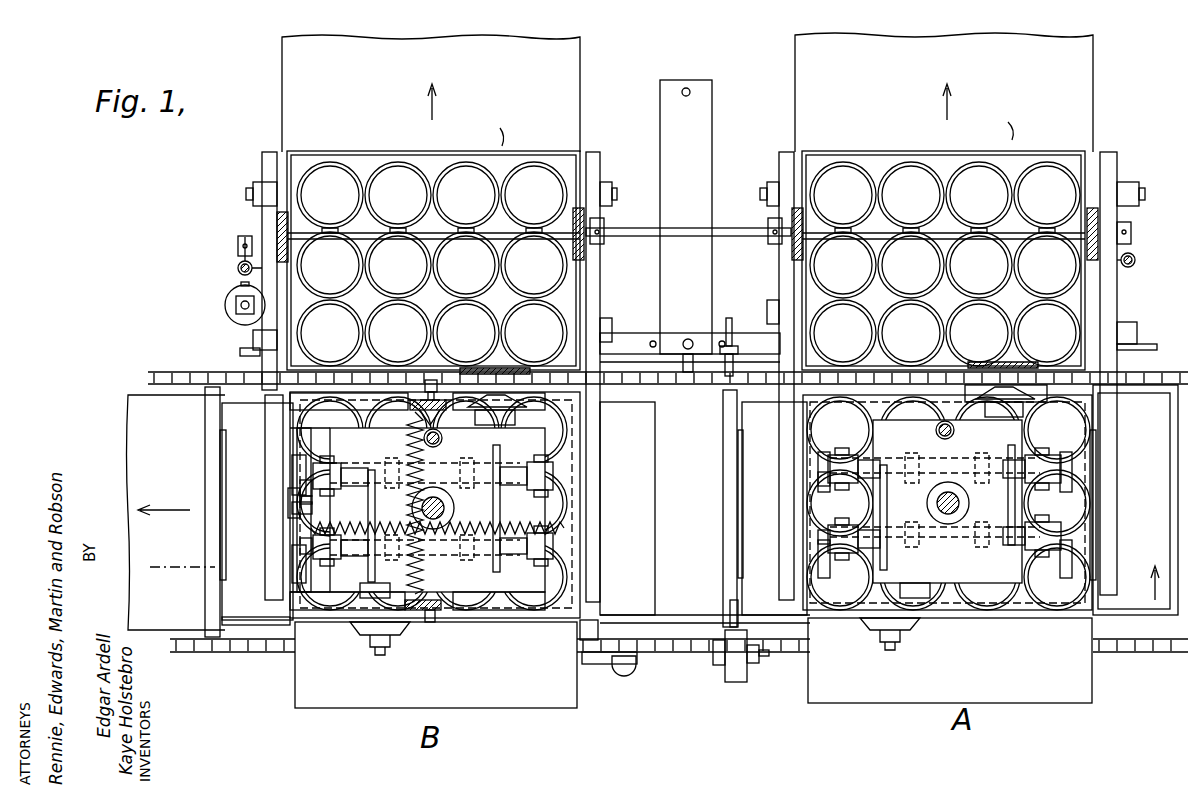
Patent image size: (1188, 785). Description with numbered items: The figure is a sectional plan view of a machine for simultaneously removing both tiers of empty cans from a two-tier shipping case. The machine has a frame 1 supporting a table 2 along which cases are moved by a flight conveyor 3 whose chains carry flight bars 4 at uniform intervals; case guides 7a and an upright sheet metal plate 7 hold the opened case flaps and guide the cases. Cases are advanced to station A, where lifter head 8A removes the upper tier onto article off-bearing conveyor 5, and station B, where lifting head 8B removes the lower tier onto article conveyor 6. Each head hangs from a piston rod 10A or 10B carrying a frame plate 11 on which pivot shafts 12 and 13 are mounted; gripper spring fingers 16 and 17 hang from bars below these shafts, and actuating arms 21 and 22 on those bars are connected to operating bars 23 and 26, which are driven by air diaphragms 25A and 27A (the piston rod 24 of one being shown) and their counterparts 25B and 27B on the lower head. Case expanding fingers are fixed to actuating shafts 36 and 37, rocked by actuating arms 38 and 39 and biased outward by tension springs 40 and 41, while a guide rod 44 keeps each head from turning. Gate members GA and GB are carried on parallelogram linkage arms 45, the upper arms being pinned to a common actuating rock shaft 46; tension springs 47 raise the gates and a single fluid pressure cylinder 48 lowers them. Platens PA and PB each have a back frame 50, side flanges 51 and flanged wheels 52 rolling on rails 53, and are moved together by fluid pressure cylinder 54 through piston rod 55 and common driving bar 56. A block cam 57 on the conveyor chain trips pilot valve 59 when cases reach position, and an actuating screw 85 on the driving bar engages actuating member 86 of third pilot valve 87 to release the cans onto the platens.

The frame 1 is at (276, 224).
The table 2 is at (182, 446).
The flight conveyor 3 is at (240, 652).
The flight bars 4 is at (208, 571).
The article off-bearing conveyor 5 is at (1088, 94).
The article conveyor 6 is at (570, 92).
The upright sheet metal plate 7 is at (210, 544).
The case guides 7a is at (285, 625).
The lifter head 8A is at (1080, 482).
The lifting head 8B is at (562, 522).
The piston rod 10A is at (970, 498).
The piston rod 10B is at (455, 500).
The frame plate 11 is at (388, 453).
The pivot shaft 12 is at (308, 550).
The pivot shaft 13 is at (306, 488).
The gripper spring fingers 16 is at (305, 560).
The gripper spring fingers 17 is at (305, 460).
The actuating arm 21 is at (340, 470).
The actuating arm 22 is at (530, 470).
The operating bar 23 is at (376, 500).
The piston rod 24 is at (376, 580).
The air operated diaphragm or cylinder 25A is at (885, 630).
The air diaphragm 25B is at (360, 628).
The operating bar 26 is at (503, 498).
The air diaphragm or cylinder 27A is at (1010, 392).
The air diaphragm 27B is at (505, 400).
The actuating shafts 36 is at (446, 400).
The shafts 37 is at (292, 494).
The actuating arms 38 is at (430, 380).
The actuating arms 39 is at (294, 506).
The tension spring 40 is at (424, 574).
The tension spring 41 is at (350, 520).
The guide rod 44 is at (440, 442).
The parallelogram linkage arms 45 is at (292, 278).
The actuating rock shaft 46 is at (645, 238).
The tension springs 47 is at (238, 268).
The fluid pressure cylinder 48 is at (225, 302).
The frame 50 is at (360, 350).
The flanges 51 is at (300, 296).
The flanged wheels 52 is at (253, 194).
The rails 53 is at (262, 165).
The fluid pressure cylinder 54 is at (706, 122).
The piston rod 55 is at (688, 376).
The common driving bar 56 is at (728, 378).
The block cam 57 is at (592, 666).
The pilot valve 59 is at (626, 676).
The actuating screw 85 is at (729, 320).
The actuating member 86 is at (736, 630).
The third pilot valve 87 is at (726, 672).